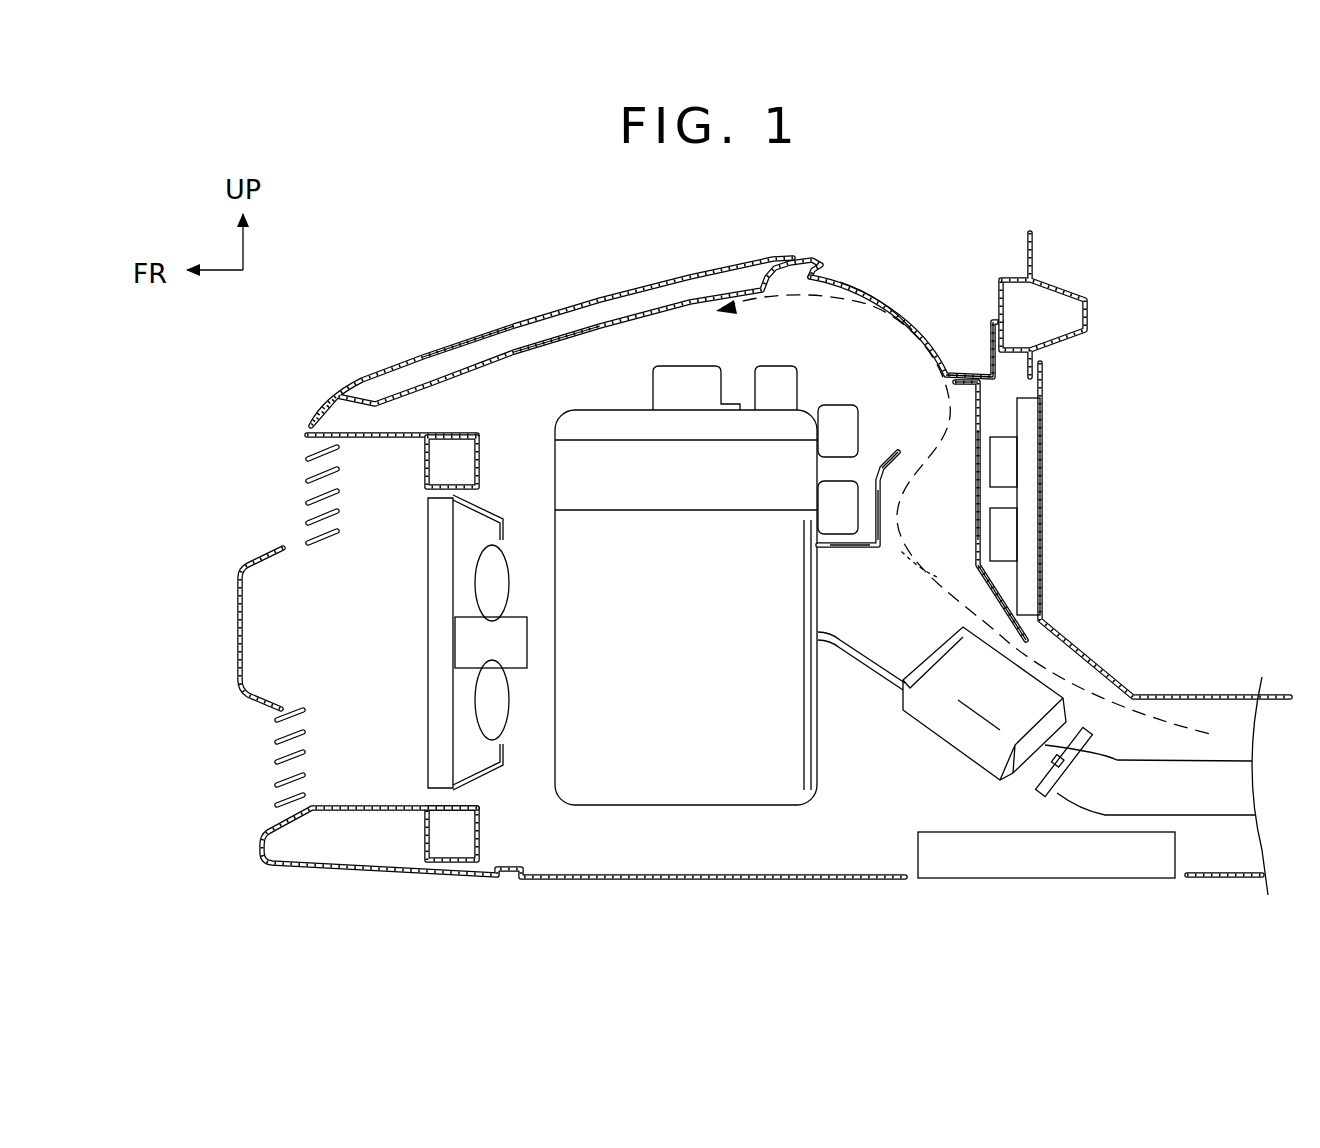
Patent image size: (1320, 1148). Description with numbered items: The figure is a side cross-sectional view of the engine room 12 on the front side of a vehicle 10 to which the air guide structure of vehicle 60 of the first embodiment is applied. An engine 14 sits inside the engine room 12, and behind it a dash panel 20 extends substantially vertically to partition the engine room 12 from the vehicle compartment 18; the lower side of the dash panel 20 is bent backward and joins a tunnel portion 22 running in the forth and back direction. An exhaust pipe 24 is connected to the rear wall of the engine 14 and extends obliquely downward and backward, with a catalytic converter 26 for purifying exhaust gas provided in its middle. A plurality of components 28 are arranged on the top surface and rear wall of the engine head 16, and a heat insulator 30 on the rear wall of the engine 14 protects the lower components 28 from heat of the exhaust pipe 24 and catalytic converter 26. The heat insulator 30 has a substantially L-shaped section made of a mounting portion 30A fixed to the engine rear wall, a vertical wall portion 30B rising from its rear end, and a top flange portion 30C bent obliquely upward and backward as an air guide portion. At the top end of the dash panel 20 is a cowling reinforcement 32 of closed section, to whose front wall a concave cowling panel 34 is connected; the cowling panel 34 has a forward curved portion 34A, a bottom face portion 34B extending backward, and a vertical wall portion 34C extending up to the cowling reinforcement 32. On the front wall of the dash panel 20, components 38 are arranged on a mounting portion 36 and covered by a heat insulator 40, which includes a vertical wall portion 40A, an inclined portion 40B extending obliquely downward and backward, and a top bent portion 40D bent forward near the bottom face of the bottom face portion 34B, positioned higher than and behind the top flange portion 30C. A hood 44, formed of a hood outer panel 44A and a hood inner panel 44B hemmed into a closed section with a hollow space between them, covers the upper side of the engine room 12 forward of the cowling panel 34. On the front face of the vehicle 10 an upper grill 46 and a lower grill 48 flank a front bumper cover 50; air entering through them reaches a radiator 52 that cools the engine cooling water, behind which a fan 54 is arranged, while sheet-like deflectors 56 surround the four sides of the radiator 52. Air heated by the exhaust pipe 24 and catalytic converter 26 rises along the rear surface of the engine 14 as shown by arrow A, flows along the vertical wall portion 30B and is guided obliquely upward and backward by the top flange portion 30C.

The vehicle 10 is at (753, 243).
The engine room 12 is at (503, 390).
The engine 14 is at (822, 728).
The engine head 16 is at (557, 479).
The vehicle compartment 18 is at (1122, 445).
The dash panel 20 is at (1043, 495).
The tunnel portion 22 is at (1225, 694).
The exhaust pipe 24 is at (848, 650).
The catalytic converter 26 is at (952, 745).
The components 28 is at (690, 385).
The heat insulator 30 is at (868, 555).
The mounting portion 30A is at (860, 565).
The vertical wall portion 30B is at (877, 502).
The top flange portion 30C is at (897, 456).
The cowling reinforcement 32 is at (1060, 296).
The cowling panel 34 is at (898, 296).
The curved portion 34A is at (880, 286).
The bottom face portion 34B is at (966, 372).
The vertical wall portion 34C is at (990, 328).
The mounting portion 36 is at (1026, 415).
The components 38 is at (1005, 463).
The heat insulator 40 is at (973, 521).
The vertical wall portion 40A is at (975, 495).
The inclined portion 40B is at (995, 590).
The top bent portion 40D is at (972, 448).
The hood 44 is at (576, 304).
The hood outer panel 44A is at (514, 322).
The hood inner panel 44B is at (562, 340).
The upper grill 46 is at (325, 470).
The lower grill 48 is at (300, 752).
The front bumper cover 50 is at (245, 618).
The radiator 52 is at (430, 648).
The fan 54 is at (500, 690).
The deflectors 56 is at (407, 443).
The air guide structure of vehicle 60 is at (906, 370).
The arrow A is at (931, 573).